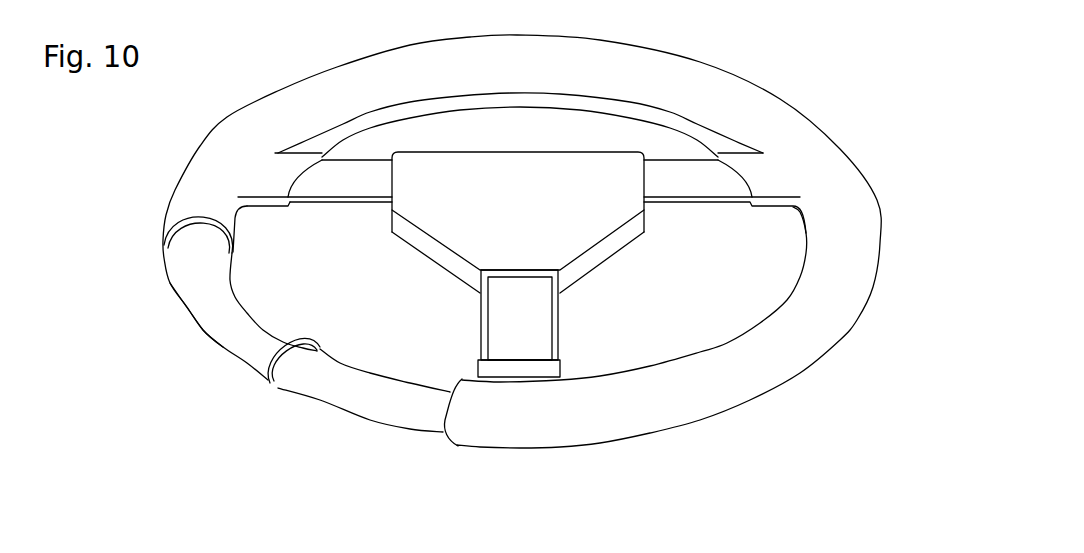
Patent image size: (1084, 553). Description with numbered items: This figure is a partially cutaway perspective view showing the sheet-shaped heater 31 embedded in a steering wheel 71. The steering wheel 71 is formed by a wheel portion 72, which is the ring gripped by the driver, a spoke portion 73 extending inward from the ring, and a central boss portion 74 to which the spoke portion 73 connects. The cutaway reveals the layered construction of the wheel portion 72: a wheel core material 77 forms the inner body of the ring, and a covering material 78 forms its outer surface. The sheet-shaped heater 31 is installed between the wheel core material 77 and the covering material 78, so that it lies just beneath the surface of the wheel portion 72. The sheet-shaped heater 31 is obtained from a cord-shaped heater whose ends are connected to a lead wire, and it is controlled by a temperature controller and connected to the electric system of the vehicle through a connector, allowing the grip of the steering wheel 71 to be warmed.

The steering wheel 71 is at (841, 362).
The wheel portion 72 is at (740, 377).
The spoke portion 73 is at (362, 172).
The boss portion 74 is at (640, 157).
The wheel core material 77 is at (328, 388).
The covering material 78 is at (193, 170).
The sheet-shaped heater 31 is at (207, 313).